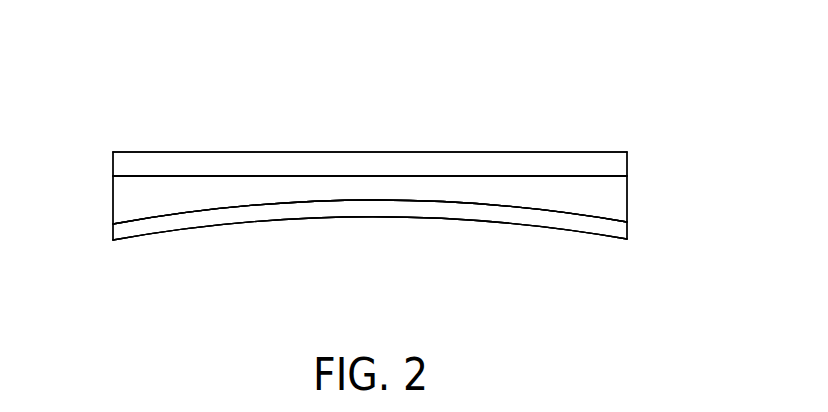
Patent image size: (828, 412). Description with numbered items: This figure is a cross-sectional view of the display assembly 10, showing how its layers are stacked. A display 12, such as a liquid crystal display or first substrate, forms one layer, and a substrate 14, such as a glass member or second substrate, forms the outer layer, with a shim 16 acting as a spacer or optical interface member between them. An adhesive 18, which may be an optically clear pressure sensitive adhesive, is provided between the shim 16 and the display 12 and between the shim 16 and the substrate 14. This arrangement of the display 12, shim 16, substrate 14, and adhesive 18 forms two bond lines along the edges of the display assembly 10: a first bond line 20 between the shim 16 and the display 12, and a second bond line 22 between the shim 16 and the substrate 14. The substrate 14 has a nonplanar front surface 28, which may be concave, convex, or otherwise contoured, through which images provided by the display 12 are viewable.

The display assembly 10 is at (369, 87).
The display 12 is at (555, 165).
The substrate 14 is at (505, 217).
The shim 16 is at (532, 192).
The adhesive 18 is at (613, 173).
The first bond line 20 is at (179, 175).
The second bond line 22 is at (179, 215).
The front surface 28 is at (341, 228).